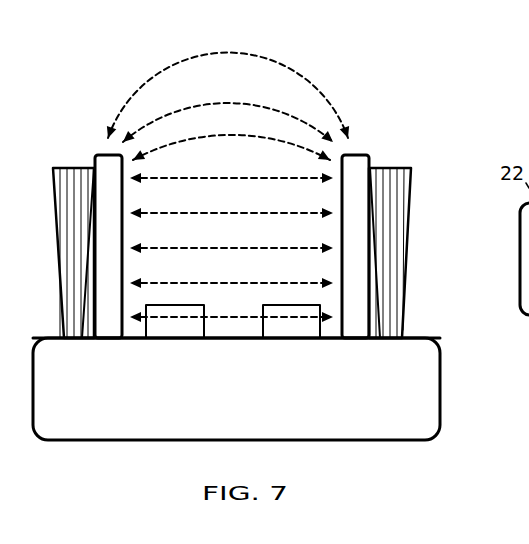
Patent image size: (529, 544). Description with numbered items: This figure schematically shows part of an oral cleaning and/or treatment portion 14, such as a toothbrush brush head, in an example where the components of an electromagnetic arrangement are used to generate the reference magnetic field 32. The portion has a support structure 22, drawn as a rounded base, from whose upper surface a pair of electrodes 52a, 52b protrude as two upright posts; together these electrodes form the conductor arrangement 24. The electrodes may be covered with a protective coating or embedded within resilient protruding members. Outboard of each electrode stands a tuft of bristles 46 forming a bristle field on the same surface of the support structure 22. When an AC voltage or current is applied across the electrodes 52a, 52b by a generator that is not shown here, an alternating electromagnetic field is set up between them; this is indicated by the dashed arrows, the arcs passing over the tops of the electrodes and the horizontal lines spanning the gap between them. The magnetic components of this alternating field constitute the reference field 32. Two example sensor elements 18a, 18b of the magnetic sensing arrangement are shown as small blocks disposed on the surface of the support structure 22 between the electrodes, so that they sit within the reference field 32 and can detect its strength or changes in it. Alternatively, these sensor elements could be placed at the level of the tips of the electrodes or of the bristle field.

The cleaning and/or treatment portion 14 is at (443, 294).
The sensor element 18a is at (167, 340).
The sensor element 18b is at (293, 340).
The support structure 22 is at (443, 388).
The conductor arrangement 24 is at (376, 131).
The reference magnetic field 32 is at (313, 68).
The bristles 46 is at (58, 256).
The electrode 52a is at (98, 155).
The electrode 52b is at (372, 157).